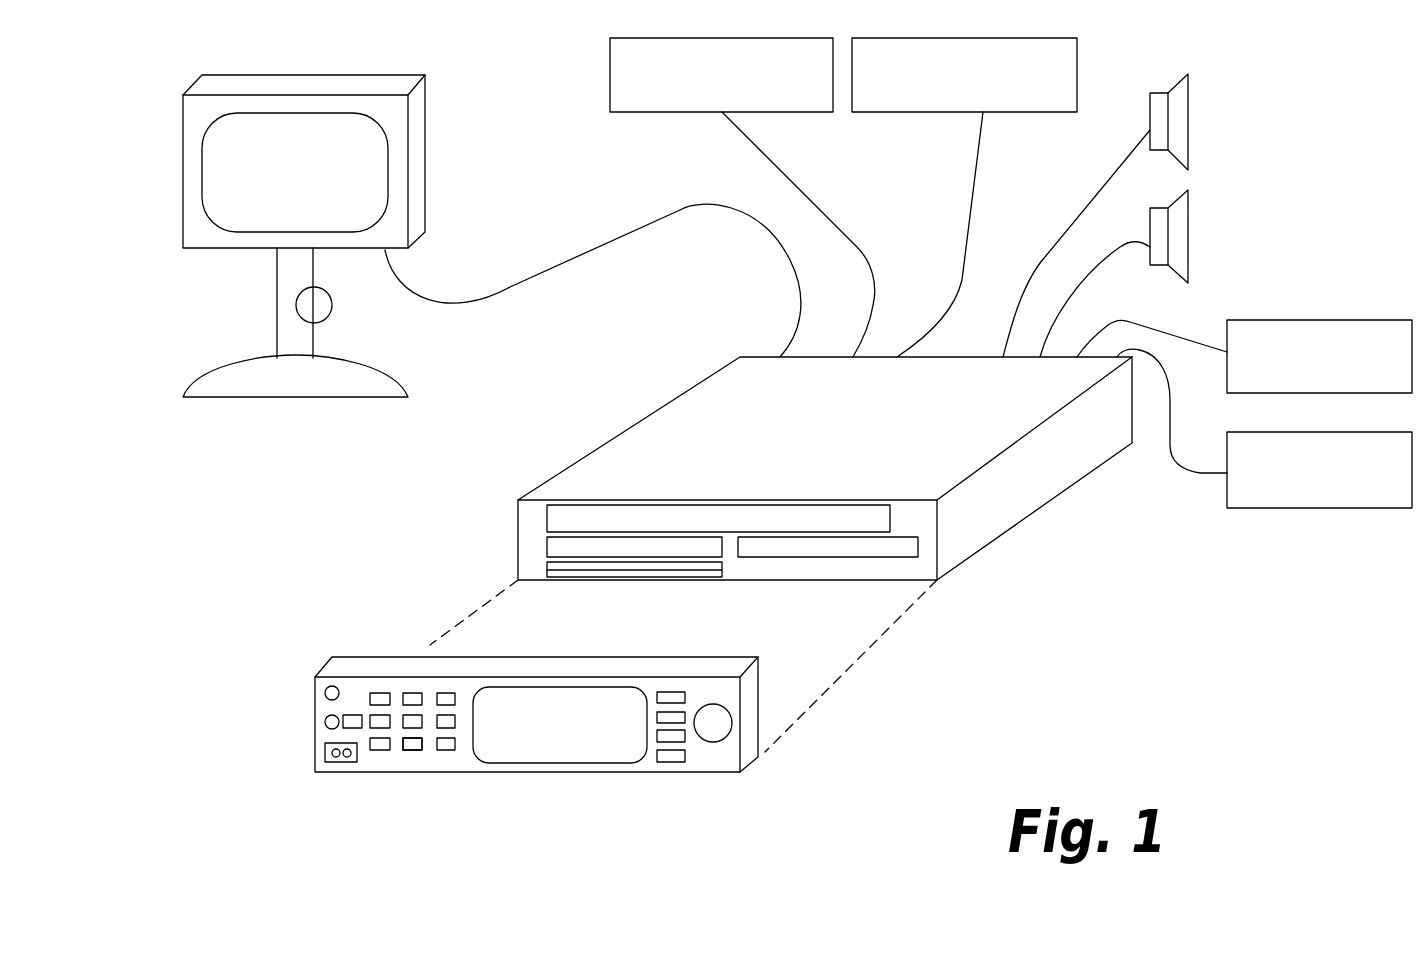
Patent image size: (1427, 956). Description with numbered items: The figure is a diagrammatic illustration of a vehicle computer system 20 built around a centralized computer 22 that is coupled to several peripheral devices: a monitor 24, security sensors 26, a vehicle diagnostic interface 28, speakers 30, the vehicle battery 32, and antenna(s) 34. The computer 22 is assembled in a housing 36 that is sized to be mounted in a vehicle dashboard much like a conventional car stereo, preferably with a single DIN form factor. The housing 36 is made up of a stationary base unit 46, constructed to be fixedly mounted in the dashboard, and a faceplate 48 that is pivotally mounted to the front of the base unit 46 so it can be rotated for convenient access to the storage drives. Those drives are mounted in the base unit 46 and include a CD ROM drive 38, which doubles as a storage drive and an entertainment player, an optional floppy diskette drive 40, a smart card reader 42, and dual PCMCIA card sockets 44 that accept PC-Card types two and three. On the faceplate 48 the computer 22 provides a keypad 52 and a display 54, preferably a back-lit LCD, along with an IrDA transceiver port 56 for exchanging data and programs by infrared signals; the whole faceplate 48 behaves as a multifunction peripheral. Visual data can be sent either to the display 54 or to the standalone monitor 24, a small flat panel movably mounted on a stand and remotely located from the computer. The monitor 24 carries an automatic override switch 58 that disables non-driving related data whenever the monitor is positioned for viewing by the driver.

The vehicle computer system 20 is at (327, 503).
The centralized computer 22 is at (985, 656).
The monitor 24 is at (407, 172).
The security sensors 26 is at (778, 112).
The vehicle diagnostic interface 28 is at (1020, 112).
The speakers 30 is at (1188, 133).
The vehicle battery 32 is at (1320, 320).
The antenna(s) 34 is at (1317, 508).
The housing 36 is at (963, 565).
The CD ROM drive 38 is at (667, 517).
The floppy diskette drive 40 is at (592, 545).
The smart card reader 42 is at (862, 530).
The dual PCMCIA card sockets 44 is at (643, 578).
The stationary base unit 46 is at (1040, 490).
The faceplate 48 is at (527, 772).
The keypad 52 is at (413, 750).
The display 54 is at (628, 733).
The IrDA transceiver port 56 is at (342, 762).
The automatic override switch 58 is at (316, 305).